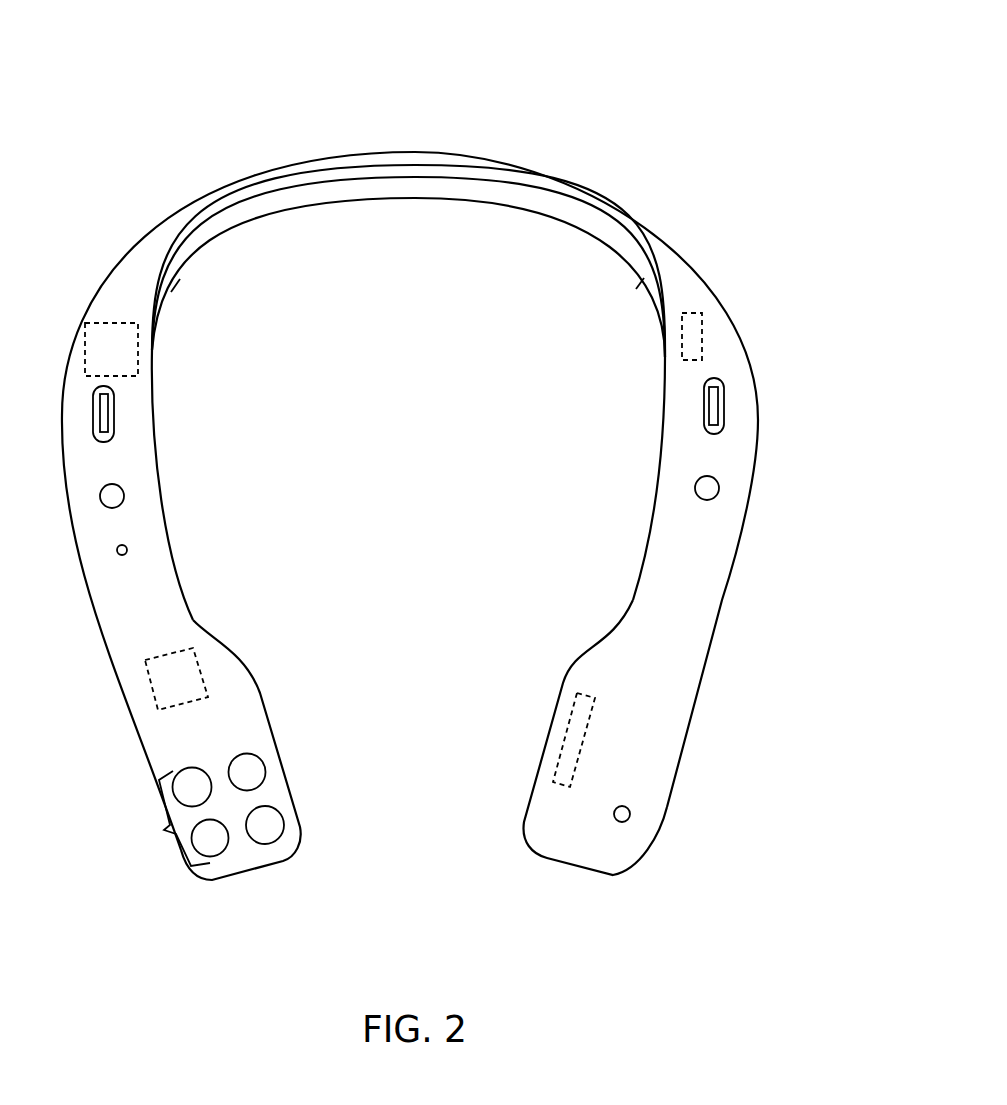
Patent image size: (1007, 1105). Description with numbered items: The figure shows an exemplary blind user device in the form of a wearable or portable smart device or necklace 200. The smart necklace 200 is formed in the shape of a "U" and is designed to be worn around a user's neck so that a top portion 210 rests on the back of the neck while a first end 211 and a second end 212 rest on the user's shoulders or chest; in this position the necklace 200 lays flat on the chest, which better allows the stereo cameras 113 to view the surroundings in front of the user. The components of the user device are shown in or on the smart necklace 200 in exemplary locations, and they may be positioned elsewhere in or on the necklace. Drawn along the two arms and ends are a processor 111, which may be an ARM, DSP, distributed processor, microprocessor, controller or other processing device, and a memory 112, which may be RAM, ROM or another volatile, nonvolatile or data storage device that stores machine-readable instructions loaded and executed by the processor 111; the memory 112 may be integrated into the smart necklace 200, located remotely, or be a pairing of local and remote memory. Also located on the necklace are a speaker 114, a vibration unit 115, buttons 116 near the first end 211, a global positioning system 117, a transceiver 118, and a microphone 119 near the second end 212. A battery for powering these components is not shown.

The wearable or portable smart device or necklace 200 is at (611, 71).
The top portion 210 is at (414, 129).
The first end 211 is at (300, 870).
The second end 212 is at (650, 884).
The processor 111 is at (203, 678).
The memory 112 is at (560, 743).
The stereo cameras 113 is at (124, 490).
The speaker 114 is at (117, 397).
The vibration unit 115 is at (138, 357).
The buttons 116 is at (168, 818).
The global positioning system (GPS) 117 is at (680, 330).
The transceiver 118 is at (127, 548).
The microphone 119 is at (630, 815).